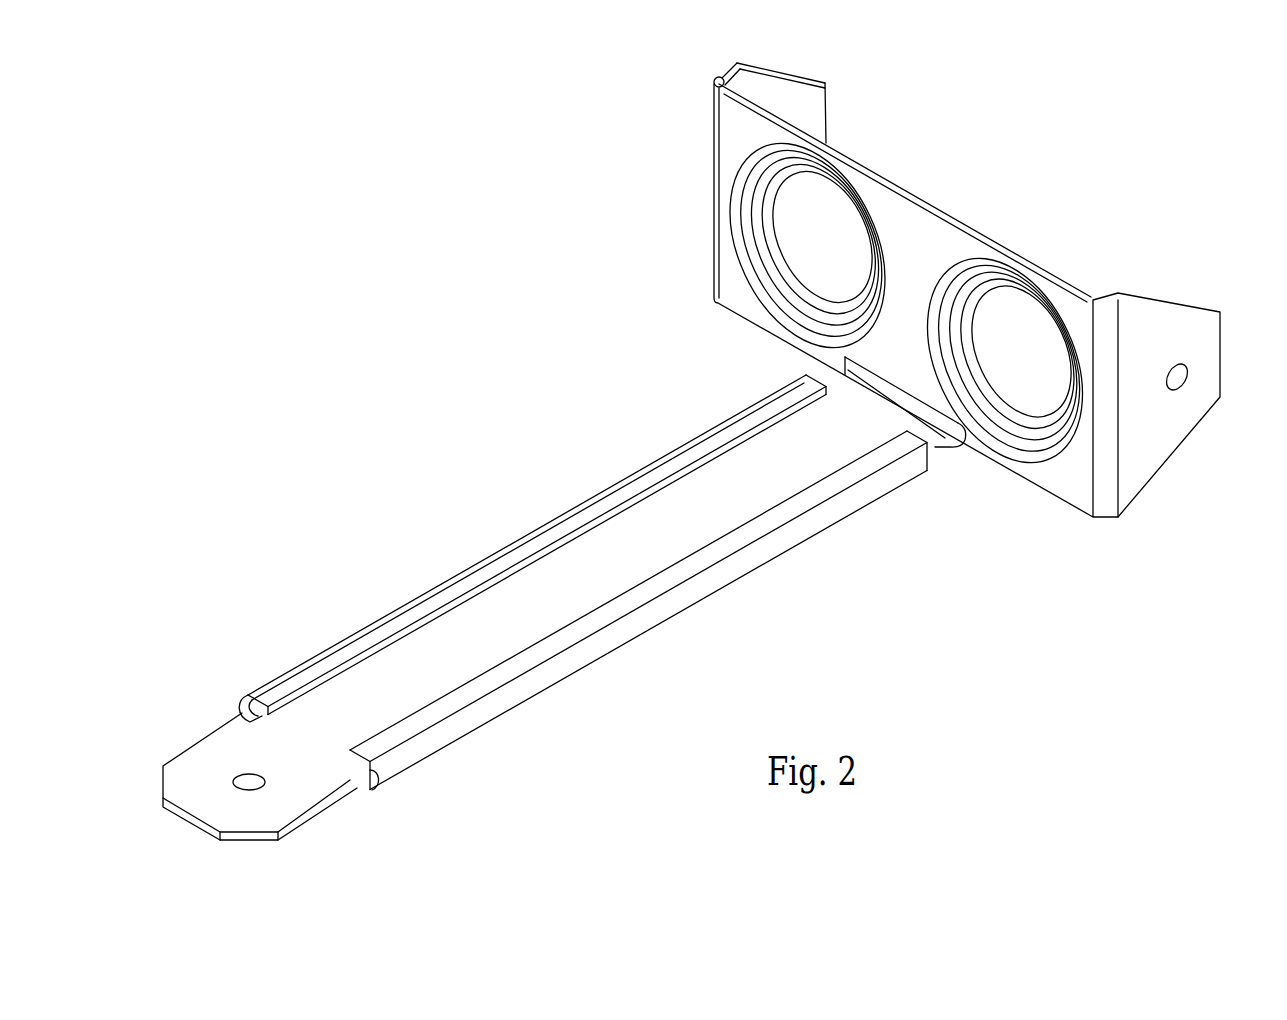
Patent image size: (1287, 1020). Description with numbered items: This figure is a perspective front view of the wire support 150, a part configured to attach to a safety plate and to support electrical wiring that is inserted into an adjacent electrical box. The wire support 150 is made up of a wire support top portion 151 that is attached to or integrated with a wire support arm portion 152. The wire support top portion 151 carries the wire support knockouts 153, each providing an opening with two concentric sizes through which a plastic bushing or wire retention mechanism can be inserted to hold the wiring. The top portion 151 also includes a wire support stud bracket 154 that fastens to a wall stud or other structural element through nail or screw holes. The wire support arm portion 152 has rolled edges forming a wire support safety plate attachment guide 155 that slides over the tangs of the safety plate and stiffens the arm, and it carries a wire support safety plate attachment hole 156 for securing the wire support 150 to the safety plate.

The wire support 150 is at (388, 71).
The wire support top portion 151 is at (1012, 477).
The wire support arm portion 152 is at (698, 513).
The wire support knockouts 153 is at (813, 243).
The wire support stud bracket 154 is at (828, 115).
The wire support safety plate attachment guide 155 is at (333, 658).
The wire support safety plate attachment hole 156 is at (250, 772).